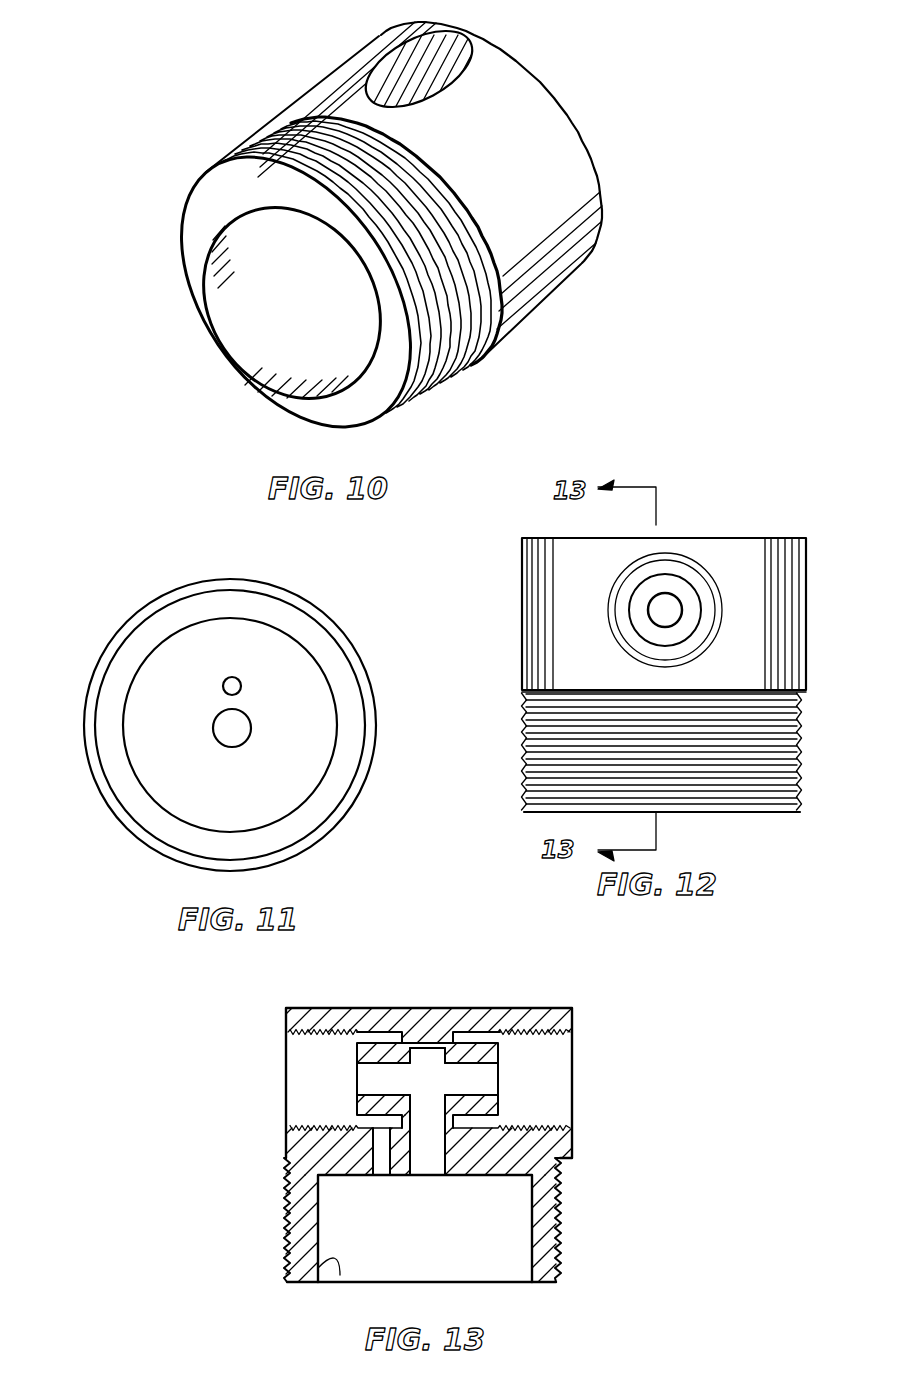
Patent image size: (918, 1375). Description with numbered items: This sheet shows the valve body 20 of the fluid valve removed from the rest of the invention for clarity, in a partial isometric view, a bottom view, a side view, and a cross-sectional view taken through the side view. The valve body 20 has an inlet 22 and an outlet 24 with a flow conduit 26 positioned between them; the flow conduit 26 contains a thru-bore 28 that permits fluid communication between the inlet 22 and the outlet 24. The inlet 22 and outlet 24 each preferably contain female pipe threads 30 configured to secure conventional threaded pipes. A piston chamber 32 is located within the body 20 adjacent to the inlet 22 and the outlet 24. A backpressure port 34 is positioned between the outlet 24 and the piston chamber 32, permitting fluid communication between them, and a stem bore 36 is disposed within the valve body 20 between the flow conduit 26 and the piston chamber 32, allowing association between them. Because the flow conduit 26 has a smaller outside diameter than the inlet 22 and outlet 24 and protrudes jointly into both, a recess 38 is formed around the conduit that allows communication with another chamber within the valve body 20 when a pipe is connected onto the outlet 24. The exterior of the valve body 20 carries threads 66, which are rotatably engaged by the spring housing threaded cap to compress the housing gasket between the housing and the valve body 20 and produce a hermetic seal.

In FIG. 10, the valve body 20 is at (552, 103).
In FIG. 11, the valve body 20 is at (137, 619).
In FIG. 12, the valve body 20 is at (522, 668).
In FIG. 13, the valve body 20 is at (423, 1008).
In FIG. 12, the inlet 22 is at (607, 593).
In FIG. 13, the inlet 22 is at (572, 1068).
In FIG. 10, the outlet 24 is at (376, 61).
In FIG. 13, the outlet 24 is at (289, 1032).
In FIG. 12, the flow conduit 26 is at (672, 597).
In FIG. 13, the flow conduit 26 is at (400, 1040).
In FIG. 13, the thru-bore 28 is at (490, 1068).
In FIG. 13, the female pipe threads 30 is at (330, 1033).
In FIG. 10, the piston chamber 32 is at (253, 328).
In FIG. 13, the piston chamber 32 is at (335, 1262).
In FIG. 11, the backpressure port 34 is at (234, 677).
In FIG. 13, the backpressure port 34 is at (372, 1150).
In FIG. 11, the stem bore 36 is at (214, 730).
In FIG. 13, the stem bore 36 is at (446, 1048).
In FIG. 13, the recess 38 is at (380, 1126).
In FIG. 10, the threads 66 is at (215, 176).
In FIG. 12, the threads 66 is at (800, 792).
In FIG. 13, the threads 66 is at (560, 1258).